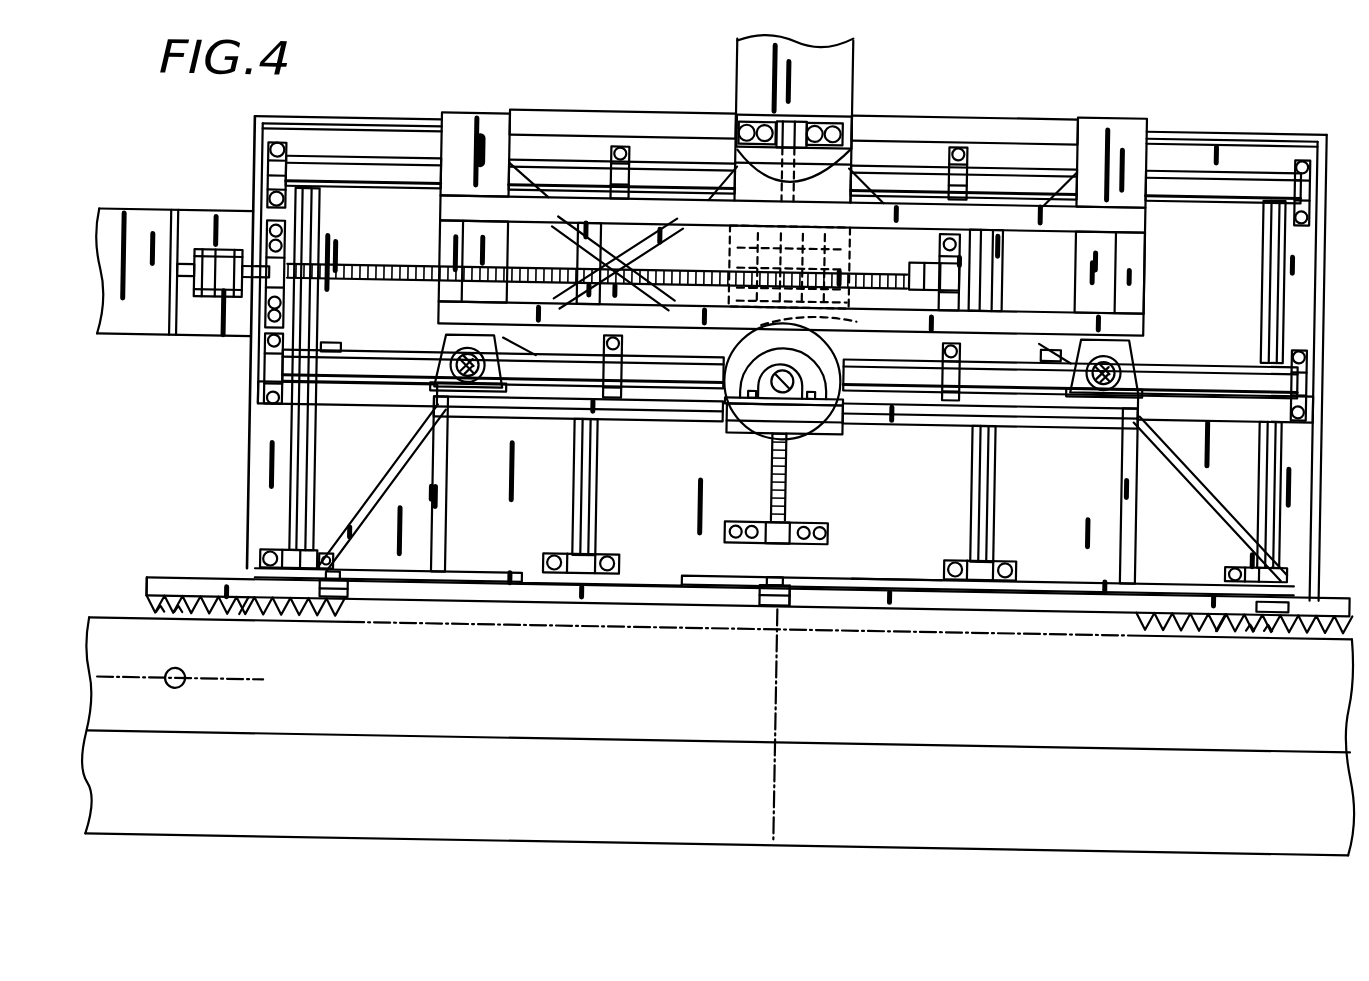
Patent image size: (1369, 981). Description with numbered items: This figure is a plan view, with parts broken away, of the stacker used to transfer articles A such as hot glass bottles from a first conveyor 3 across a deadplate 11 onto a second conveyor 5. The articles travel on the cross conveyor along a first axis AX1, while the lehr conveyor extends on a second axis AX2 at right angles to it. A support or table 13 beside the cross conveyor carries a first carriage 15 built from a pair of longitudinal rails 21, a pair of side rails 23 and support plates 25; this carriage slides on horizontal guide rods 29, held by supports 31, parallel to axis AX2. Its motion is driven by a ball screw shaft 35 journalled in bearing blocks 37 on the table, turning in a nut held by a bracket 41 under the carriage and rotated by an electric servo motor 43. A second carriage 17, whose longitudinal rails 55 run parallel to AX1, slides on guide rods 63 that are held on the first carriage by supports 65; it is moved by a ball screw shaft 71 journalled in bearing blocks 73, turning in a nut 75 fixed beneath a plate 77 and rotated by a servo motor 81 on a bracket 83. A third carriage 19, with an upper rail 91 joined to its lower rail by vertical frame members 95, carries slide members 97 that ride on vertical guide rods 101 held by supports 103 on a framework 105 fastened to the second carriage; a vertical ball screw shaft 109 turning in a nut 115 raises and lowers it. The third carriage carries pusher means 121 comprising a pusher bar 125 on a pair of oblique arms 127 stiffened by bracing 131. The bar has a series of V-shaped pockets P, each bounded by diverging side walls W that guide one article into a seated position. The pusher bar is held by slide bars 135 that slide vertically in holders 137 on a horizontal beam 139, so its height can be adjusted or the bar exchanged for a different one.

The first conveyor 3 is at (126, 627).
The second conveyor 5 is at (756, 246).
The deadplate 11 is at (346, 803).
The support 13 is at (249, 474).
The first carriage 15 is at (272, 420).
The second carriage 17 is at (468, 115).
The third carriage 19 is at (1027, 422).
The longitudinal rails 21 is at (306, 146).
The side rails 23 is at (271, 215).
The support plates 25 is at (643, 240).
The guide rods 29 is at (313, 515).
The supports 31 is at (590, 563).
The ball screw shaft 35 is at (825, 159).
The bearing blocks 37 is at (772, 120).
The bracket 41 is at (844, 304).
The electric servo motor 43 is at (845, 81).
The longitudinal rails 55 is at (1016, 126).
The guide rods 63 is at (343, 202).
The supports 65 is at (600, 149).
The ball screw shaft 71 is at (363, 269).
The bearing blocks 73 is at (962, 274).
The nut 75 is at (816, 261).
The plate 77 is at (733, 175).
The electric servo motor 81 is at (137, 345).
The bracket 83 is at (207, 337).
The upper rail 91 is at (544, 413).
The vertical frame members 95 is at (428, 394).
The slide members 97 is at (441, 345).
The vertical guide rods 101 is at (475, 383).
The supports 103 is at (430, 337).
The framework 105 is at (1142, 220).
The ball screw shaft 109 is at (769, 430).
The nut 115 is at (792, 390).
The pusher means 121 is at (204, 589).
The pusher bar 125 is at (158, 588).
The arms 127 is at (344, 576).
The bracing 131 is at (452, 552).
The slide bars 135 is at (764, 600).
The holders 137 is at (790, 601).
The horizontal beam 139 is at (856, 566).
The articles A is at (173, 697).
The first axis AX1 is at (202, 689).
The second axis AX2 is at (781, 781).
The pockets P is at (182, 621).
The side walls W is at (248, 626).